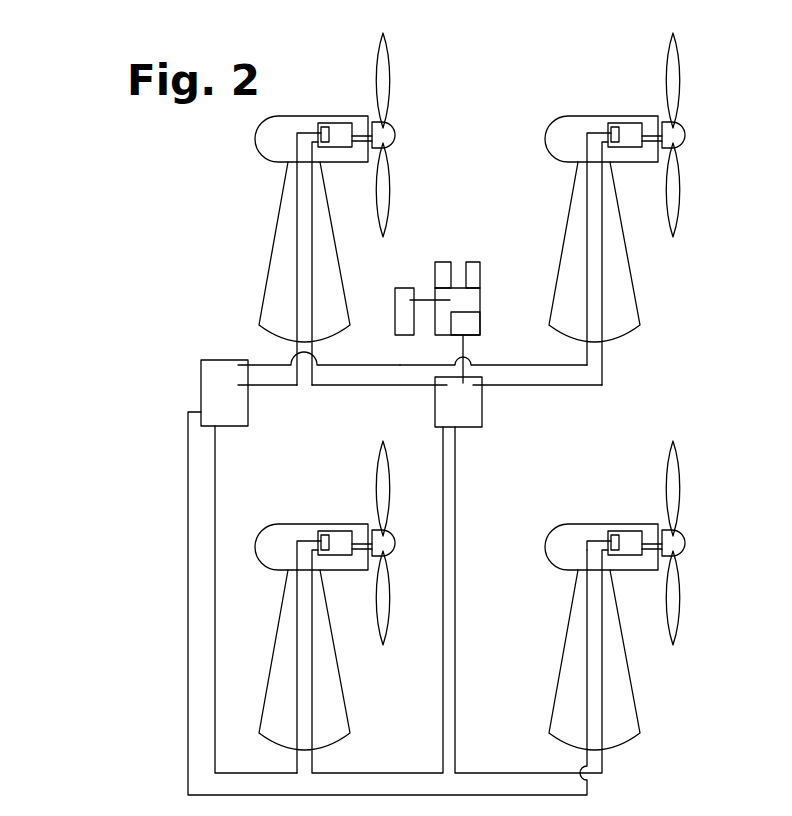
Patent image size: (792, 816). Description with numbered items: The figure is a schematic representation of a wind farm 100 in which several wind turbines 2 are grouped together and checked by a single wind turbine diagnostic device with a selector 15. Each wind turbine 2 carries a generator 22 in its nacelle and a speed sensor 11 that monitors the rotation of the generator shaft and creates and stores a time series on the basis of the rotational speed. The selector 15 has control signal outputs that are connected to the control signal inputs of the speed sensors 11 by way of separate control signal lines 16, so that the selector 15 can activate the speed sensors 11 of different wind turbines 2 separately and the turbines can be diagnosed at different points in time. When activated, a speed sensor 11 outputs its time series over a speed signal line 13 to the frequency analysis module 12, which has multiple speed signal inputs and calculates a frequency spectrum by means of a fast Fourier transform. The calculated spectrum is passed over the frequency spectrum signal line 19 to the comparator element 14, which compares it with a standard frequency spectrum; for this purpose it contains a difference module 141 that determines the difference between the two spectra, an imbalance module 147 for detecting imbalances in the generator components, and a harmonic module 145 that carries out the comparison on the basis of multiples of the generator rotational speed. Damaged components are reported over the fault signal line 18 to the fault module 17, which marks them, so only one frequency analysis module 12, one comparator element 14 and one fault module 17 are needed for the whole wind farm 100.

The wind turbine 2 is at (247, 221).
The speed sensor 11 is at (323, 126).
The generator 22 is at (341, 123).
The frequency analysis module 12 is at (473, 427).
The speed signal line 13 is at (604, 366).
The comparator element 14 is at (458, 292).
The harmonic module 145 is at (443, 275).
The imbalance module 147 is at (475, 275).
The difference module 141 is at (475, 322).
The selector 15 is at (217, 368).
The control signal line 16 is at (265, 367).
The fault module 17 is at (398, 304).
The fault signal line 18 is at (423, 300).
The frequency spectrum signal line 19 is at (463, 350).
The wind farm 100 is at (674, 410).